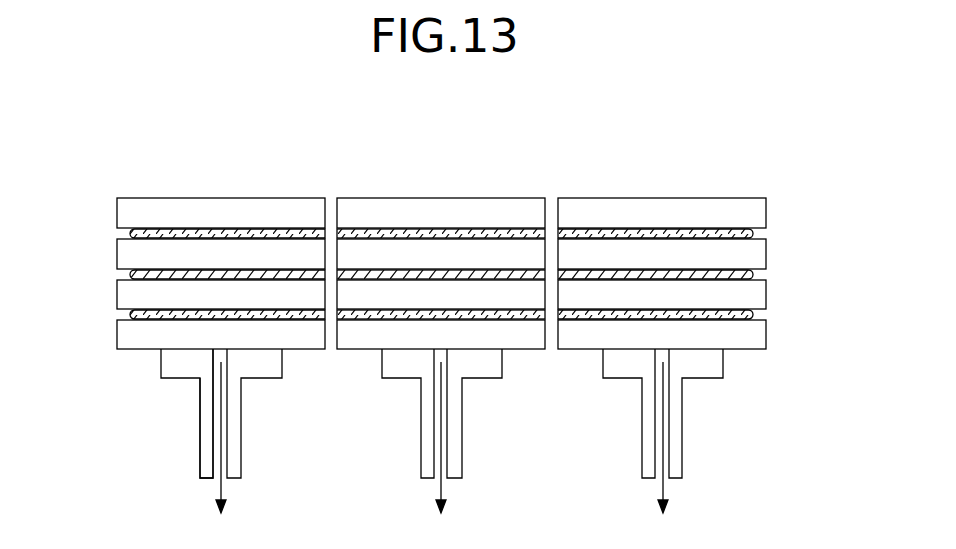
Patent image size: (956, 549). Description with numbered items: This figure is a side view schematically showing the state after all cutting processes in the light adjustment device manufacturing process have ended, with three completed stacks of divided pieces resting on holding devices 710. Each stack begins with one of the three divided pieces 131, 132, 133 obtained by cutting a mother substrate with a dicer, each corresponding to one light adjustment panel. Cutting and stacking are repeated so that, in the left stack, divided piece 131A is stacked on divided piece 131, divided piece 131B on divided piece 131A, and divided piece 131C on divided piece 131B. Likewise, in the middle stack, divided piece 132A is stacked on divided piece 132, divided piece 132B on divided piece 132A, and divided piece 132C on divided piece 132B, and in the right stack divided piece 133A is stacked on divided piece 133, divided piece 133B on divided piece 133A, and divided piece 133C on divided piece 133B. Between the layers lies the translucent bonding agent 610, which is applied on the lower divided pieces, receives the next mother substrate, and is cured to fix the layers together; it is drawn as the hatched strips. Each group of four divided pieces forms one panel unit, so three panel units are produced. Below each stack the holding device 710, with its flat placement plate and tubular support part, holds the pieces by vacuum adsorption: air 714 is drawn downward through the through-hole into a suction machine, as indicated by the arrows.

The divided piece 131 is at (127, 333).
The divided piece 131A is at (126, 292).
The divided piece 131B is at (126, 252).
The divided piece 131C is at (126, 213).
The divided piece 132 is at (347, 333).
The divided piece 132A is at (523, 292).
The divided piece 132B is at (375, 253).
The divided piece 132C is at (510, 213).
The divided piece 133 is at (569, 333).
The divided piece 133A is at (758, 292).
The divided piece 133B is at (758, 252).
The divided piece 133C is at (758, 213).
The translucent bonding agent 610 is at (221, 233).
The holding device 710 is at (188, 460).
The air 714 is at (220, 496).